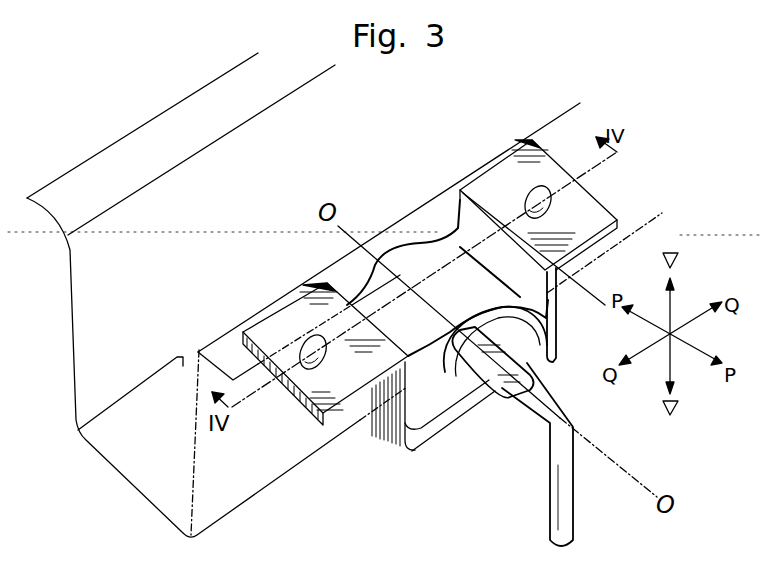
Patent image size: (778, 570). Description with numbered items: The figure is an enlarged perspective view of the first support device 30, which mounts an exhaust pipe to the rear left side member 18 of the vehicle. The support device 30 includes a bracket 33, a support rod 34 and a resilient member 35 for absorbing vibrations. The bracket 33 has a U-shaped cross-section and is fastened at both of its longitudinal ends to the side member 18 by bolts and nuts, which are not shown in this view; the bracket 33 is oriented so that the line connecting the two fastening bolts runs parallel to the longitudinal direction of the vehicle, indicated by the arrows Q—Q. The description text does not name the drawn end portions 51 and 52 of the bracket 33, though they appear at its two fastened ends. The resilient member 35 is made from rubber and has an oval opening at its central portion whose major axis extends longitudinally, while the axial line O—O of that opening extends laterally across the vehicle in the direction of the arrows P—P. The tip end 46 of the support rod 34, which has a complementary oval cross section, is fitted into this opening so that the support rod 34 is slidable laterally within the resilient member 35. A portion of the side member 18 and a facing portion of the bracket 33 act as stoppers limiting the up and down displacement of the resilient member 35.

The rear left side member 18 is at (95, 158).
The first support device 30 is at (452, 308).
The bracket 33 is at (403, 452).
The support rod 34 is at (573, 493).
The resilient member 35 is at (432, 388).
The tip end 46 is at (556, 332).
The upper mounting plate with hole 51 is at (553, 220).
The lower mounting plate with hole 52 is at (313, 372).